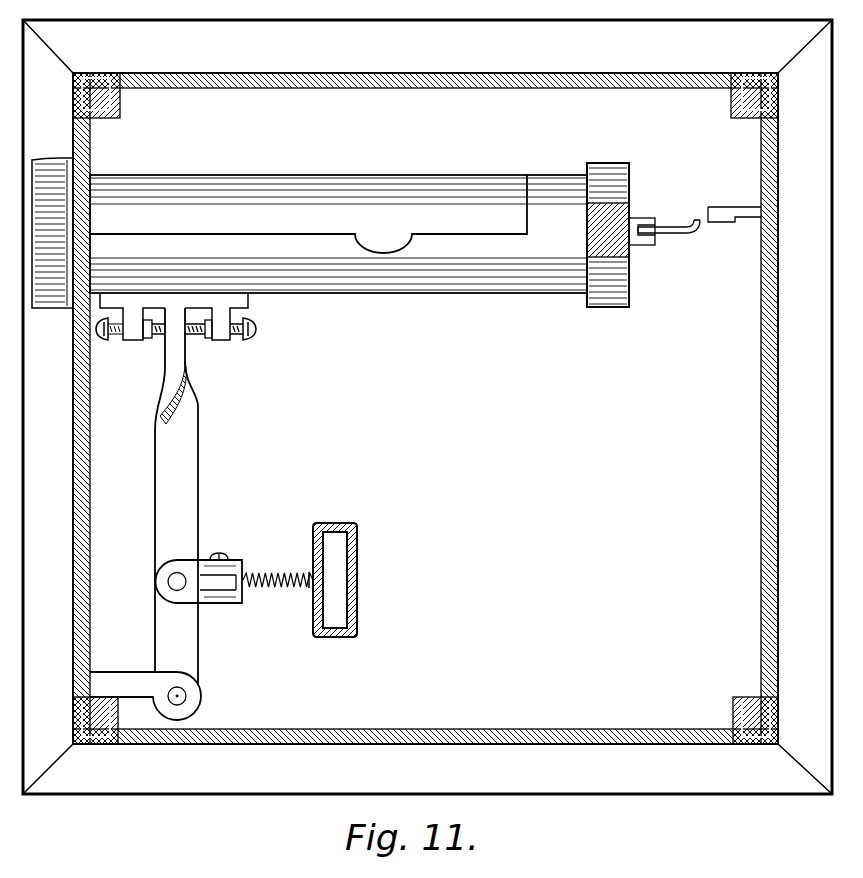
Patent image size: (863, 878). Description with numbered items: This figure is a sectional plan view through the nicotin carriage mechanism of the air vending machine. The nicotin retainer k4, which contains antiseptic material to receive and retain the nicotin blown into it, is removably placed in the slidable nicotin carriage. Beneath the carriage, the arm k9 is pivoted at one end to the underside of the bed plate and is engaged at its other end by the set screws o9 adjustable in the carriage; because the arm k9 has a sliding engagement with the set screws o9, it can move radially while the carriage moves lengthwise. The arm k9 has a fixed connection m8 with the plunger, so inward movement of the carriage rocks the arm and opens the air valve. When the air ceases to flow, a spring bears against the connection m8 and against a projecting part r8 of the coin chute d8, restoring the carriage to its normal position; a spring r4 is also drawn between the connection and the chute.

The nicotin retainer k4 is at (395, 235).
The set screws o9 is at (232, 336).
The arm k9 is at (185, 456).
The fixed connection m8 is at (205, 560).
The spring r4 is at (283, 575).
The projecting part r8 is at (311, 570).
The coin chute d8 is at (342, 582).